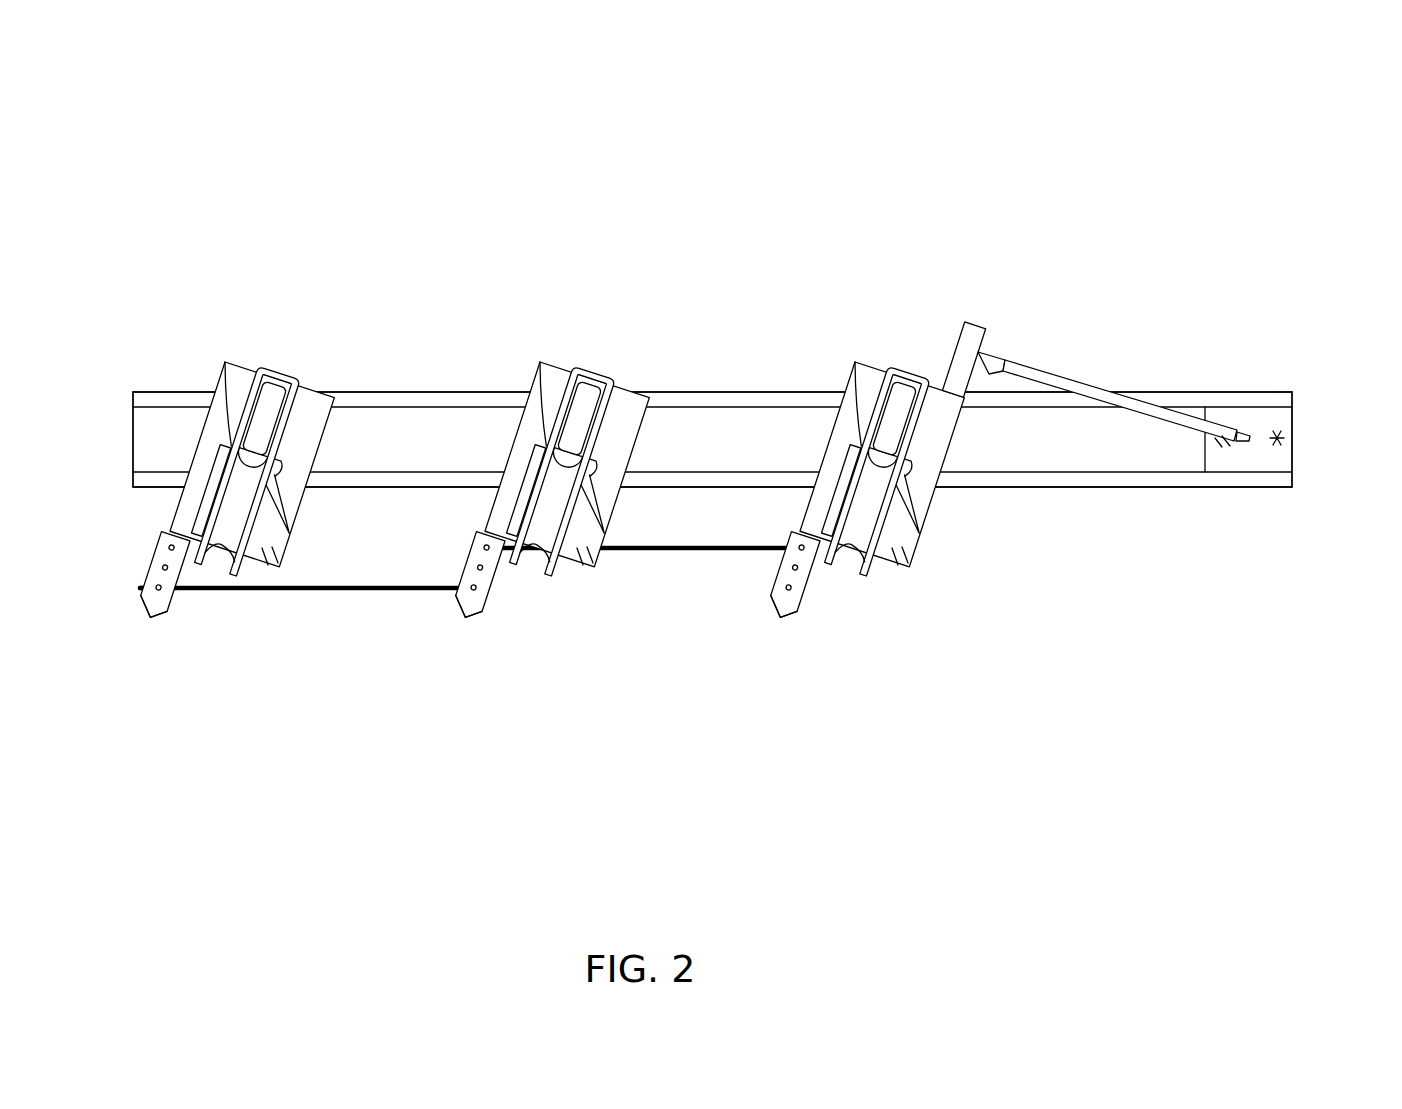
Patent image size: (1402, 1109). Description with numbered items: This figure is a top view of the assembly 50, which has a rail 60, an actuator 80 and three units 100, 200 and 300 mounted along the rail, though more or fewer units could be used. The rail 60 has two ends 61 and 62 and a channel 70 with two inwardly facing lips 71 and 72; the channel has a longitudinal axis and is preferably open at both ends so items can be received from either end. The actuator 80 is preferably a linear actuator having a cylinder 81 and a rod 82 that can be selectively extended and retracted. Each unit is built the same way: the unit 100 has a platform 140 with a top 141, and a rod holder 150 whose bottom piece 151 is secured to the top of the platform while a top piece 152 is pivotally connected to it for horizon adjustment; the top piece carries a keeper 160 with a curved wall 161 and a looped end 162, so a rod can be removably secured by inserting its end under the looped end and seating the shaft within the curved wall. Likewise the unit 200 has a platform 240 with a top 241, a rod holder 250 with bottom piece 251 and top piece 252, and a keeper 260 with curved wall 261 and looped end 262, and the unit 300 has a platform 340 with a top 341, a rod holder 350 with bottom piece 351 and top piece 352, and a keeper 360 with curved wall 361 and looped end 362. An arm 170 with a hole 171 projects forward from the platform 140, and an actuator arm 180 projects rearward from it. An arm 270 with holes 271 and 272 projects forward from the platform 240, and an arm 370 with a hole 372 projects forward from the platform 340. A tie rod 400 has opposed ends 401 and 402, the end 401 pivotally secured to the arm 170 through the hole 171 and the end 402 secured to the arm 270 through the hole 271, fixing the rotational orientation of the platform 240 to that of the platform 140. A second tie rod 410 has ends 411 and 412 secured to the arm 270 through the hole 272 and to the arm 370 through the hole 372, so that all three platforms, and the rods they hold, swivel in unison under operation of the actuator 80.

The assembly 50 is at (753, 150).
The rail 60 is at (714, 407).
The end 61 is at (1292, 442).
The end 62 is at (134, 440).
The channel 70 is at (157, 412).
The inwardly facing lip 71 is at (157, 490).
The inwardly facing lip 72 is at (188, 402).
The actuator 80 is at (1145, 384).
The cylinder 81 is at (1077, 376).
The rod 82 is at (1003, 358).
The unit 100 is at (979, 487).
The platform 140 is at (898, 566).
The top 141 is at (908, 564).
The rod holder 150 is at (931, 392).
The bottom piece 151 is at (880, 567).
The top piece 152 is at (919, 533).
The keeper 160 is at (880, 367).
The curved wall 161 is at (855, 362).
The looped end 162 is at (911, 375).
The arm 170 is at (795, 546).
The hole 171 is at (786, 615).
The actuator arm 180 is at (973, 323).
The unit 200 is at (566, 496).
The platform 240 is at (580, 566).
The top 241 is at (590, 564).
The rod holder 250 is at (616, 392).
The bottom piece 251 is at (565, 567).
The top piece 252 is at (604, 533).
The keeper 260 is at (565, 367).
The curved wall 261 is at (540, 362).
The looped end 262 is at (596, 375).
The arm 270 is at (477, 567).
The hole 271 is at (486, 552).
The hole 272 is at (470, 618).
The unit 300 is at (248, 422).
The platform 340 is at (266, 566).
The top 341 is at (277, 564).
The rod holder 350 is at (303, 392).
The bottom piece 351 is at (250, 567).
The top piece 352 is at (289, 533).
The keeper 360 is at (252, 367).
The curved wall 361 is at (225, 362).
The looped end 362 is at (283, 375).
The arm 370 is at (153, 568).
The hole 372 is at (163, 615).
The tie rod 400 is at (620, 601).
The end 401 is at (806, 556).
The end 402 is at (480, 546).
The tie rod 410 is at (297, 664).
The end 411 is at (481, 595).
The end 412 is at (148, 590).